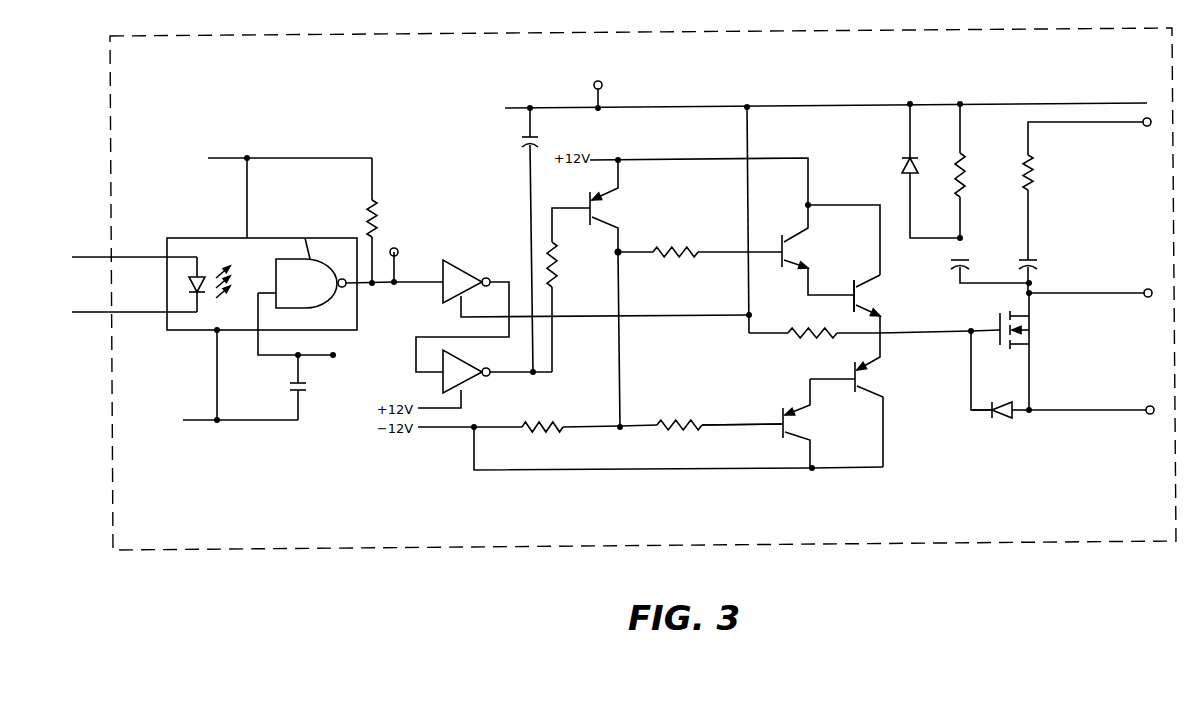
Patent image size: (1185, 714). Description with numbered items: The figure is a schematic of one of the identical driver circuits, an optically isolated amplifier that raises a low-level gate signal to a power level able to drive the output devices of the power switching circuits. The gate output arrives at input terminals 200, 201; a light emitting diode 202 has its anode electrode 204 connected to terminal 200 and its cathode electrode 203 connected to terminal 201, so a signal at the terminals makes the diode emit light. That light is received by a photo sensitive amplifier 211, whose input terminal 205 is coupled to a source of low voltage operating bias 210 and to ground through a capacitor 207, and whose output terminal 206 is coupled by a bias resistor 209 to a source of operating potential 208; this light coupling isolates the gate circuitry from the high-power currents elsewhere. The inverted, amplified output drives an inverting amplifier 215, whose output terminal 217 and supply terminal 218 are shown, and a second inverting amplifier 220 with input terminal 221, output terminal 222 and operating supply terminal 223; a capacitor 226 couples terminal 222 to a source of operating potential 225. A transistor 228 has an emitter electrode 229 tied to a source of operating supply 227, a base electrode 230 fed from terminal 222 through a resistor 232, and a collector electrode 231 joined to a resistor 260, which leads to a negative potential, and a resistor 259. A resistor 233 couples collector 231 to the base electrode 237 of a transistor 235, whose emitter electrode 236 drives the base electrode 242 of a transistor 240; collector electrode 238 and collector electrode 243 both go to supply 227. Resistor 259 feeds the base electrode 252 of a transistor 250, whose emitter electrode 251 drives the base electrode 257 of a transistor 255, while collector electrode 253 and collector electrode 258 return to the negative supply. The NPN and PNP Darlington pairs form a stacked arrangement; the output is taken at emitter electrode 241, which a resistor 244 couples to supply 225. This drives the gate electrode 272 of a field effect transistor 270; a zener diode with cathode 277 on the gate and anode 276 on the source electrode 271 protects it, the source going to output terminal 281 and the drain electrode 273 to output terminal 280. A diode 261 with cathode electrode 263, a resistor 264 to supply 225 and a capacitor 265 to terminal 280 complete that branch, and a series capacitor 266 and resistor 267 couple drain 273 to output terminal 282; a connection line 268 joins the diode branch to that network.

The input terminal 200 is at (142, 257).
The input terminal 201 is at (134, 312).
The light emitting diode 202 is at (216, 270).
The cathode electrode 203 is at (206, 300).
The anode electrode 204 is at (200, 238).
The input terminal 205 is at (262, 292).
The output terminal 206 is at (347, 292).
The capacitor 207 is at (292, 388).
The source of operating potential 208 is at (250, 157).
The bias resistor 209 is at (378, 216).
The source of low voltage operating bias 210 is at (336, 355).
The photo sensitive amplifier 211 is at (305, 238).
The inverting amplifier 215 is at (462, 264).
The output terminal 217 is at (491, 279).
The supply terminal 218 is at (458, 318).
The inverting amplifier 220 is at (443, 383).
The input terminal 221 is at (416, 355).
The output terminal 222 is at (491, 369).
The operating supply terminal 223 is at (463, 399).
The source of operating potential 225 is at (603, 104).
The capacitor 226 is at (525, 140).
The source of operating supply 227 is at (621, 158).
The transistor 228 is at (610, 218).
The emitter electrode 229 is at (606, 196).
The base electrode 230 is at (566, 207).
The collector electrode 231 is at (613, 248).
The resistor 232 is at (560, 272).
The resistor 233 is at (678, 258).
The transistor 235 is at (797, 245).
The emitter electrode 236 is at (800, 270).
The base electrode 237 is at (764, 250).
The collector electrode 238 is at (812, 205).
The transistor 240 is at (868, 294).
The emitter electrode 241 is at (886, 316).
The base electrode 242 is at (835, 294).
The collector electrode 243 is at (878, 275).
The resistor 244 is at (814, 330).
The transistor 250 is at (790, 421).
The emitter electrode 251 is at (798, 410).
The base electrode 252 is at (740, 426).
The collector electrode 253 is at (811, 446).
The transistor 255 is at (870, 371).
The base electrode 257 is at (812, 366).
The collector electrode 258 is at (887, 400).
The resistor 259 is at (670, 432).
The resistor 260 is at (530, 432).
The diode 261 is at (902, 168).
The cathode electrode 263 is at (908, 140).
The resistor 264 is at (966, 178).
The capacitor 265 is at (968, 262).
The capacitor 266 is at (1040, 264).
The resistor 267 is at (1036, 182).
The connection line 268 is at (910, 215).
The field effect transistor 270 is at (1008, 347).
The source electrode 271 is at (1032, 358).
The gate electrode 272 is at (988, 328).
The drain electrode 273 is at (1032, 305).
The anode 276 is at (1033, 413).
The cathode 277 is at (978, 414).
The output terminal 280 is at (1152, 288).
The output terminal 281 is at (1150, 416).
The output terminal 282 is at (1148, 127).